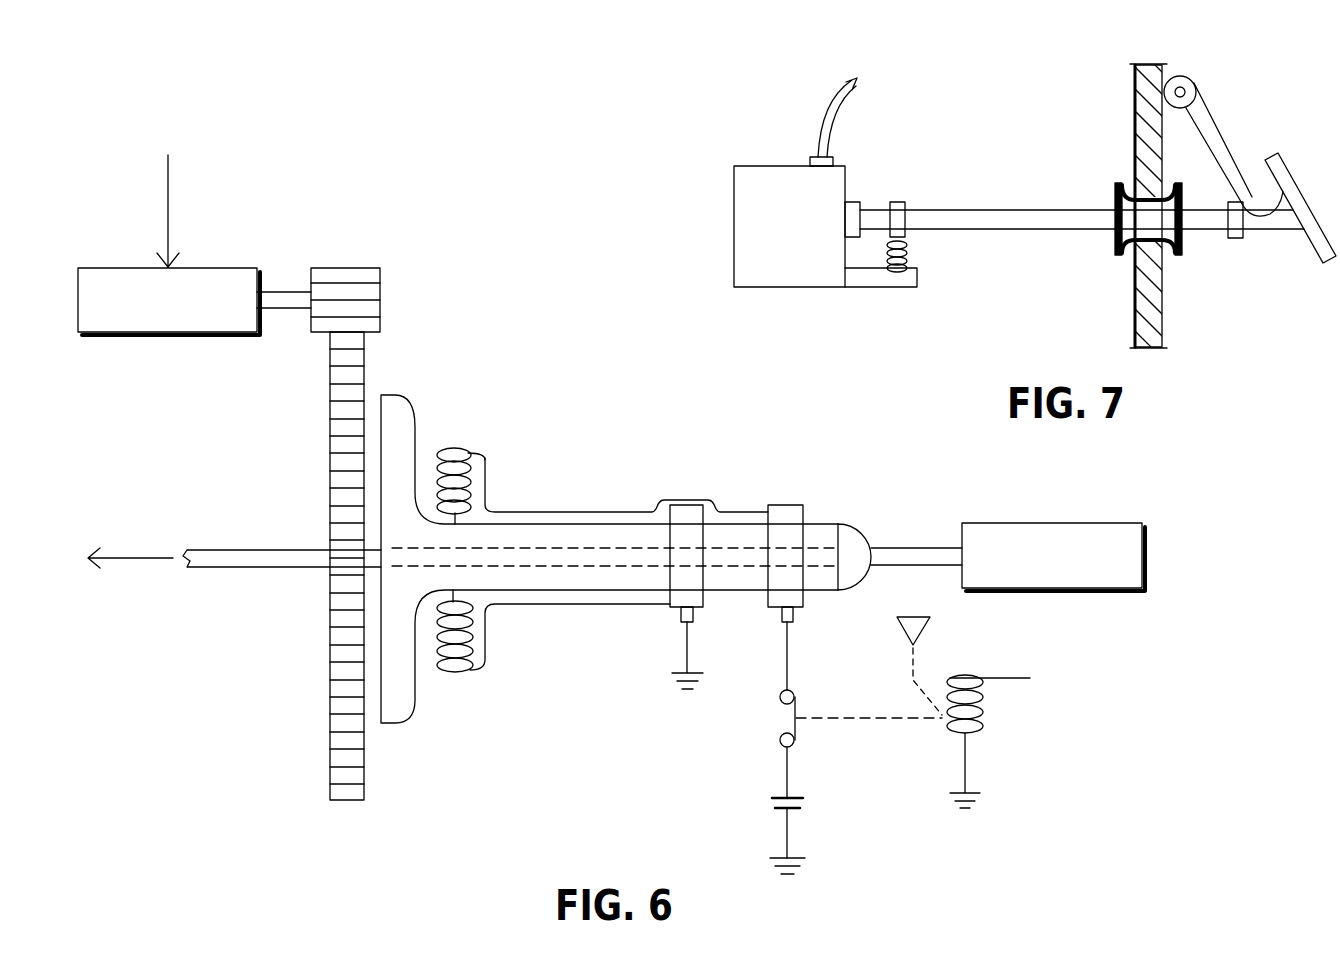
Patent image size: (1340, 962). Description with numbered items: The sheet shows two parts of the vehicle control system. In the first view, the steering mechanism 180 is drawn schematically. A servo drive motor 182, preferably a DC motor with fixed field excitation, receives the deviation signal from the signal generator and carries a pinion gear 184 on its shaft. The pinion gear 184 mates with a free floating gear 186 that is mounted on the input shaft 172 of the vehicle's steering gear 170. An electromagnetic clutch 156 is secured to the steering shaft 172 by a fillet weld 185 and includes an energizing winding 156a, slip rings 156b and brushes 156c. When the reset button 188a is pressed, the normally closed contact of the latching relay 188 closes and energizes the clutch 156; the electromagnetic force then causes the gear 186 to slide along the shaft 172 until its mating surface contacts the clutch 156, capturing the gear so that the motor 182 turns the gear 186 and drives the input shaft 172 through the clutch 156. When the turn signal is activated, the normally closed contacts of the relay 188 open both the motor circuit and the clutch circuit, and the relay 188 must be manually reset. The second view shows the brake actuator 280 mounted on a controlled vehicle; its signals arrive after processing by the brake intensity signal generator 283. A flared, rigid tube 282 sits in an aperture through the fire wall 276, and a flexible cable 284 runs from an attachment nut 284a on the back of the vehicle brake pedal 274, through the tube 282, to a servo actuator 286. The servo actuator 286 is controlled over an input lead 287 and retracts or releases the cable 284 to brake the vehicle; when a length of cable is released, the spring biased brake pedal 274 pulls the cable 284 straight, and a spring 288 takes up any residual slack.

In FIG. 6, the brake intensity signal generator 283 is at (158, 180).
In FIG. 6, the servo drive motor 182 is at (138, 268).
In FIG. 6, the pinion gear 184 is at (368, 268).
In FIG. 6, the free floating gear 186 is at (334, 675).
In FIG. 6, the input shaft 172 is at (262, 550).
In FIG. 6, the electromagnetic clutch 156 is at (398, 397).
In FIG. 6, the energizing winding 156a is at (470, 458).
In FIG. 6, the slip rings 156b is at (783, 505).
In FIG. 6, the brushes 156c is at (781, 630).
In FIG. 6, the fillet weld 185 is at (855, 528).
In FIG. 6, the steering gear 170 is at (1020, 523).
In FIG. 6, the reset button 188a is at (918, 616).
In FIG. 6, the latching relay 188 is at (988, 722).
In FIG. 6, the steering mechanism 180 is at (603, 764).
In FIG. 7, the brake actuator 280 is at (1013, 122).
In FIG. 7, the servo actuator 286 is at (790, 166).
In FIG. 7, the input lead 287 is at (840, 82).
In FIG. 7, the flexible cable 284 is at (978, 210).
In FIG. 7, the spring 288 is at (908, 248).
In FIG. 7, the fire wall 276 is at (1165, 318).
In FIG. 7, the flared rigid tube 282 is at (1116, 245).
In FIG. 7, the attachment nut 284a is at (1238, 240).
In FIG. 7, the vehicle brake pedal 274 is at (1213, 108).